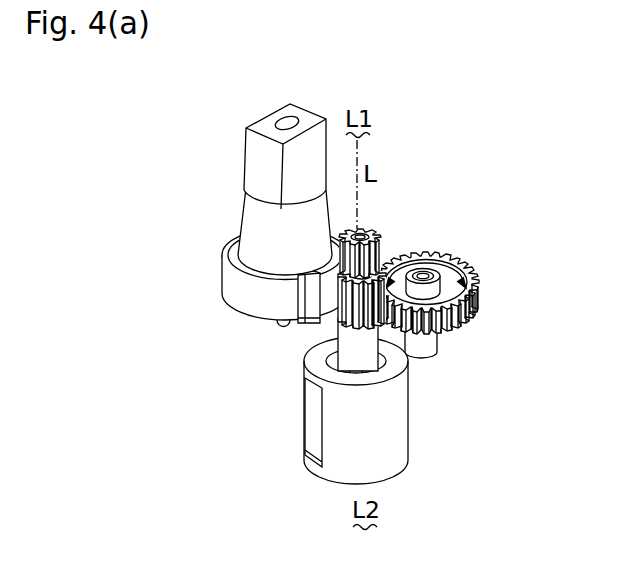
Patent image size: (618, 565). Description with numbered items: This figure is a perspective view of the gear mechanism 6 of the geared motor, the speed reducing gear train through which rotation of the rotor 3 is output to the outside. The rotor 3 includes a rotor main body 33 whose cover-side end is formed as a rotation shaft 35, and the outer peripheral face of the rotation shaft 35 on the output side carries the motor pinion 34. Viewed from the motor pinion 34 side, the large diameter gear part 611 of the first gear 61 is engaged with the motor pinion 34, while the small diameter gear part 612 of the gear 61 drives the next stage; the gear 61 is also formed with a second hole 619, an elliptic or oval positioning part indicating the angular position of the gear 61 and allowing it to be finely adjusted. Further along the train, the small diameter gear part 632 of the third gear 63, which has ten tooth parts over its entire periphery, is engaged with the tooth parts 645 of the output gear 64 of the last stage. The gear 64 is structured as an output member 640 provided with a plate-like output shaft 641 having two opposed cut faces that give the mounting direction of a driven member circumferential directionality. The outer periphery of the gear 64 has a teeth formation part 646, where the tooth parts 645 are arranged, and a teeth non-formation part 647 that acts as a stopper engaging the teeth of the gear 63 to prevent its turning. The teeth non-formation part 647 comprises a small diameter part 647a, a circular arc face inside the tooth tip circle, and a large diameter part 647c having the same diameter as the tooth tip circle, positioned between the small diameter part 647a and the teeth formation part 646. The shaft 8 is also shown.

The rotor 3 is at (345, 447).
The rotor main body 33 is at (340, 456).
The gear mechanism 6 is at (390, 335).
The shaft 8 is at (417, 338).
The motor pinion 34 is at (342, 297).
The rotation shaft 35 is at (295, 343).
The first gear 61 is at (474, 288).
The third gear 63 is at (423, 230).
The output gear 64 is at (240, 242).
The large diameter gear part 611 is at (477, 298).
The small diameter gear part 612 is at (440, 340).
The second hole 619 is at (450, 266).
The small diameter gear part 632 is at (362, 228).
The output member 640 is at (233, 189).
The output shaft 641 is at (240, 210).
The tooth part 645 is at (250, 170).
The teeth formation part 646 is at (342, 249).
The teeth non-formation part 647 is at (240, 304).
The small diameter part 647a is at (235, 283).
The large diameter part 647c is at (312, 300).